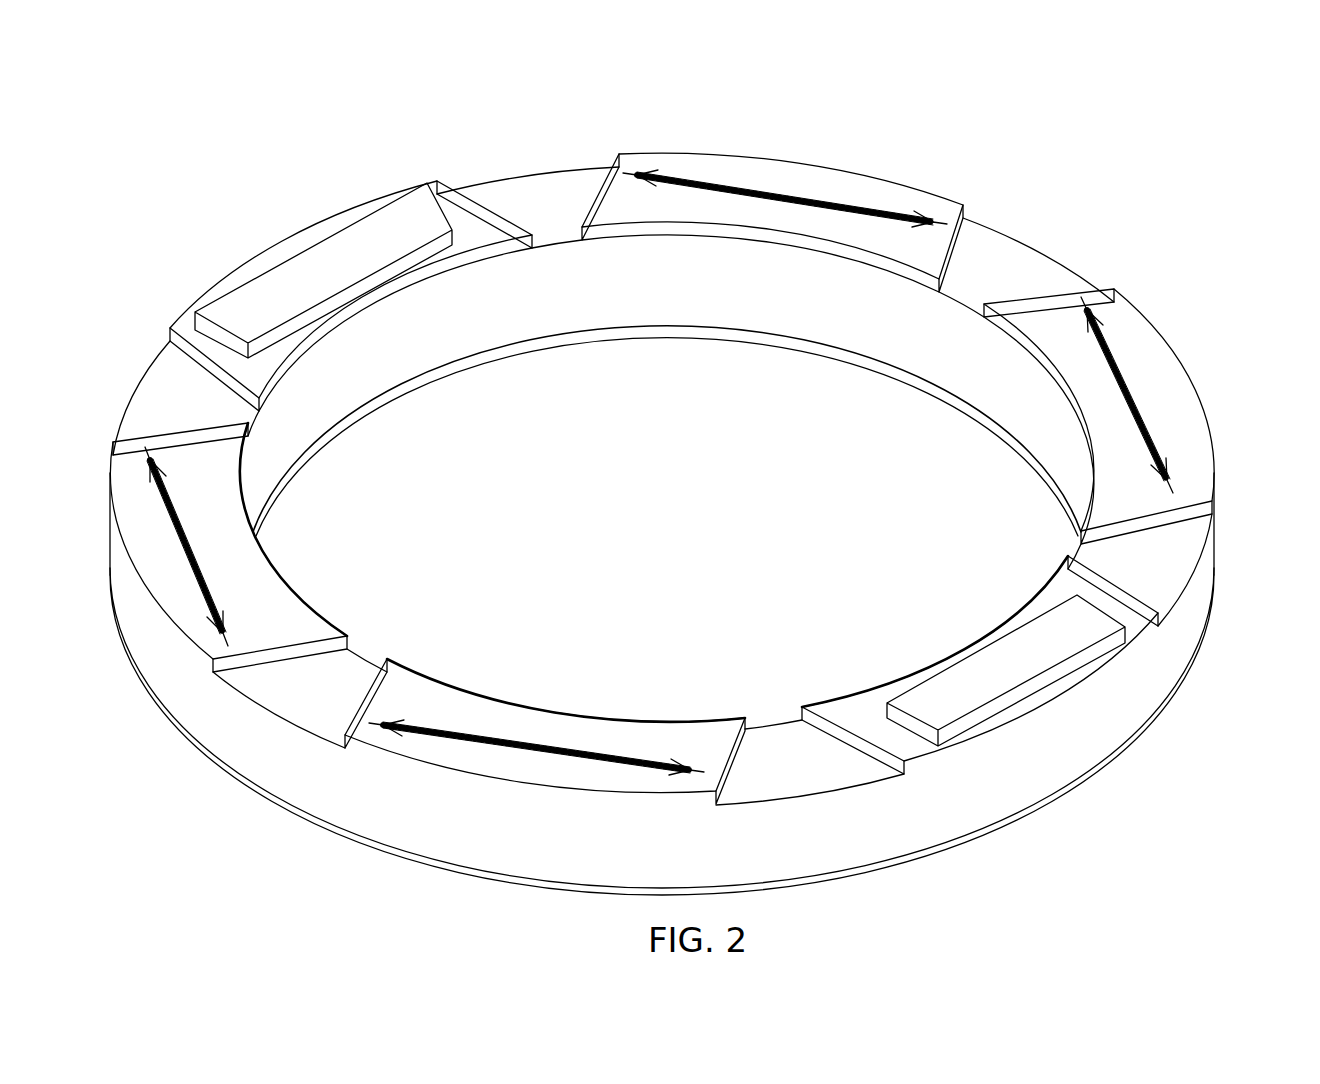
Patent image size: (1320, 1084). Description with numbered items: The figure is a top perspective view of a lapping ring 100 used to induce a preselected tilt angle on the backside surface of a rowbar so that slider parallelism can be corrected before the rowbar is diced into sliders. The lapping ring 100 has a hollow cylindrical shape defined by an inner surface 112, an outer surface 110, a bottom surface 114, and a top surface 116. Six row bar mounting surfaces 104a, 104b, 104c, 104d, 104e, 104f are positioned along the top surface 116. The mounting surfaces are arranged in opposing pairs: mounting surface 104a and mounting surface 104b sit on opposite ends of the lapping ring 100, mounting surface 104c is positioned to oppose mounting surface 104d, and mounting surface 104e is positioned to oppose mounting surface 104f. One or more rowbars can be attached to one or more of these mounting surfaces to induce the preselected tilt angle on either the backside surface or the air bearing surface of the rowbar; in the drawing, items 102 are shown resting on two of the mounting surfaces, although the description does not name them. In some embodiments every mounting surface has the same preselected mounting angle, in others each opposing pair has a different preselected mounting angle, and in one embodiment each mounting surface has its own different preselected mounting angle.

The lapping ring 100 is at (1047, 192).
The substrate / block 102 is at (377, 222).
The mounting surface 104a is at (286, 250).
The mounting surface 104b is at (853, 703).
The mounting surface 104c is at (275, 585).
The mounting surface 104d is at (1204, 421).
The mounting surface 104e is at (420, 688).
The mounting surface 104f is at (641, 165).
The outer surface 110 is at (1210, 556).
The inner surface 112 is at (293, 456).
The bottom surface 114 is at (659, 336).
The top surface 116 is at (527, 170).